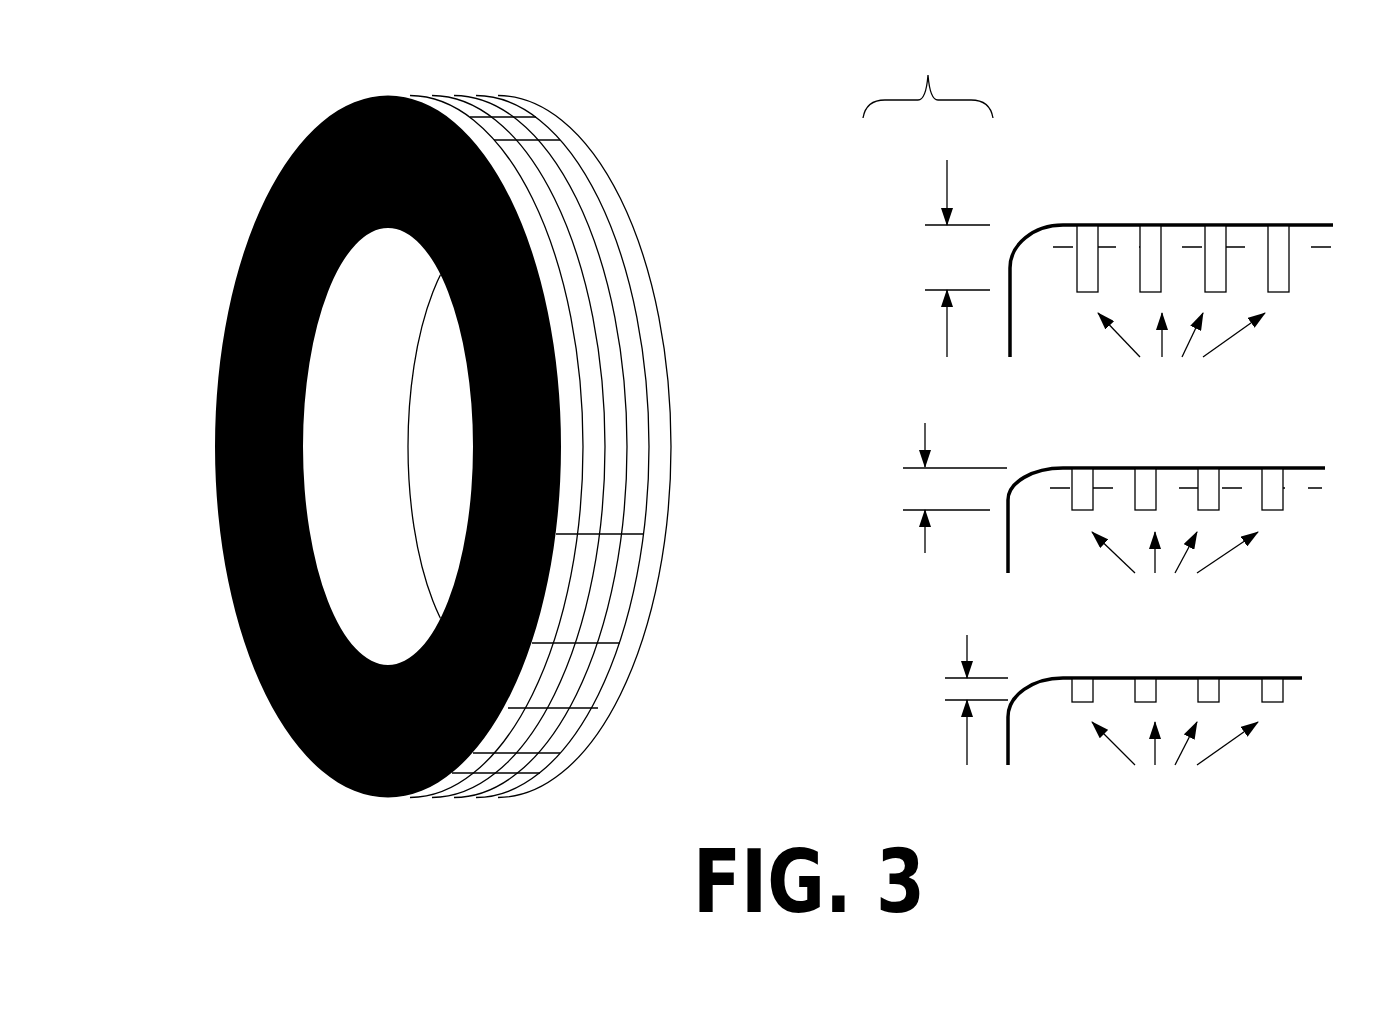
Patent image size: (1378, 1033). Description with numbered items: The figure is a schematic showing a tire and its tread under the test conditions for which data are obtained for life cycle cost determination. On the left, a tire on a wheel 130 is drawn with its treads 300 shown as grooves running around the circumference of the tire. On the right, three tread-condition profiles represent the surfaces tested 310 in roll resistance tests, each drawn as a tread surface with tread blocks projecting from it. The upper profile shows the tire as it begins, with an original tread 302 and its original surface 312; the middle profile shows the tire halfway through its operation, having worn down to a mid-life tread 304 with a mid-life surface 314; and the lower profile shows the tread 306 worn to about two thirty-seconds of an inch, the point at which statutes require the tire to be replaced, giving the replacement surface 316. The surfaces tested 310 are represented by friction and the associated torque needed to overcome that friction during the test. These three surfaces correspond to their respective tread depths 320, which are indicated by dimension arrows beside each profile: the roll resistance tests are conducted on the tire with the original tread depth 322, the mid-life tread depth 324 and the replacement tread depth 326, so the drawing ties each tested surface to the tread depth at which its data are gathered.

The wheel 130 is at (412, 425).
The treads 300 is at (587, 158).
The surfaces tested 310 is at (1118, 160).
The original surface 312 is at (1182, 225).
The mid-life surface 314 is at (1120, 250).
The replacement surface 316 is at (1113, 488).
The original tread 302 is at (1181, 360).
The mid-life tread 304 is at (1175, 578).
The tread worn to replacement 306 is at (1175, 769).
The tread depths 320 is at (928, 63).
The original tread depth 322 is at (957, 237).
The mid-life tread depth 324 is at (955, 465).
The replacement tread depth 326 is at (976, 725).